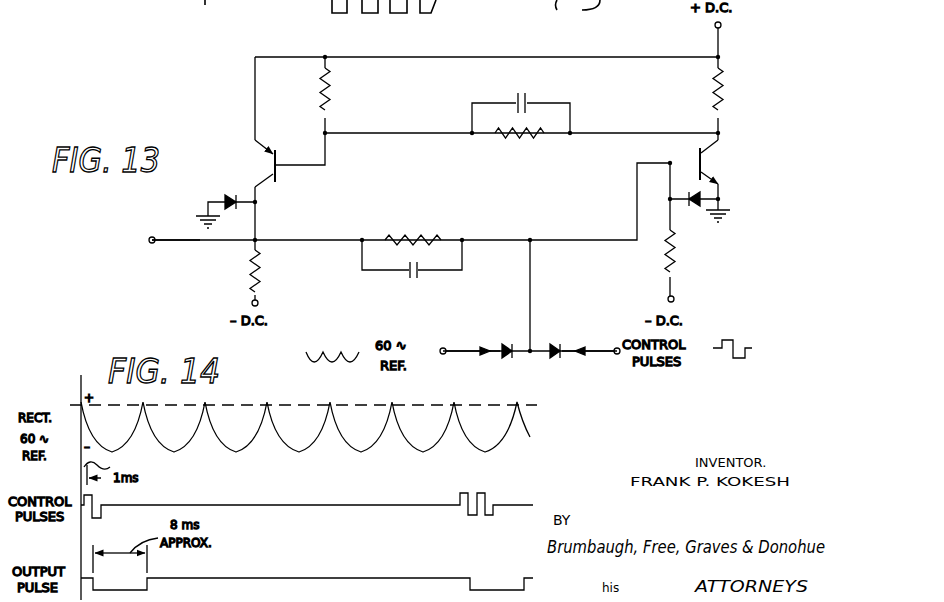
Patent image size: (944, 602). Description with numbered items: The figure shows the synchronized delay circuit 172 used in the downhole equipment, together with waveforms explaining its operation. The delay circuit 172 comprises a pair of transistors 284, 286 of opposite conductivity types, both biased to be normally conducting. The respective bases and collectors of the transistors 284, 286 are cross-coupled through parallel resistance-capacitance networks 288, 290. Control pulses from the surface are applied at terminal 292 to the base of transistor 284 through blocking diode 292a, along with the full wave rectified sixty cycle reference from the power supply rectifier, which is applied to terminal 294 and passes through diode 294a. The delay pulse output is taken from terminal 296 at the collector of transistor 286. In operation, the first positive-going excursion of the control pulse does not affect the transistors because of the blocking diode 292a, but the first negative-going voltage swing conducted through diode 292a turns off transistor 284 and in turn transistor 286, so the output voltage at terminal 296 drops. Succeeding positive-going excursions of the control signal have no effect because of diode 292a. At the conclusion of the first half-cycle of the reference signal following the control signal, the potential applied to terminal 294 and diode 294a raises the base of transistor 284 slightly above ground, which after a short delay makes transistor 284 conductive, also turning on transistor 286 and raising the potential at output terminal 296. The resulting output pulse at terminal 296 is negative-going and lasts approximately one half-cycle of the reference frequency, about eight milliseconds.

In FIG. 13, the delay circuit 172 is at (477, 52).
In FIG. 13, the transistor 284 is at (727, 164).
In FIG. 13, the transistor 286 is at (292, 198).
In FIG. 13, the parallel resistance-capacitance network 288 is at (546, 92).
In FIG. 13, the parallel resistance-capacitance network 290 is at (382, 281).
In FIG. 13, the terminal 292 is at (615, 349).
In FIG. 13, the blocking diode 292a is at (554, 358).
In FIG. 13, the terminal 294 is at (468, 340).
In FIG. 14, the terminal 294 is at (79, 478).
In FIG. 13, the diode 294a is at (508, 344).
In FIG. 13, the terminal 296 is at (152, 243).